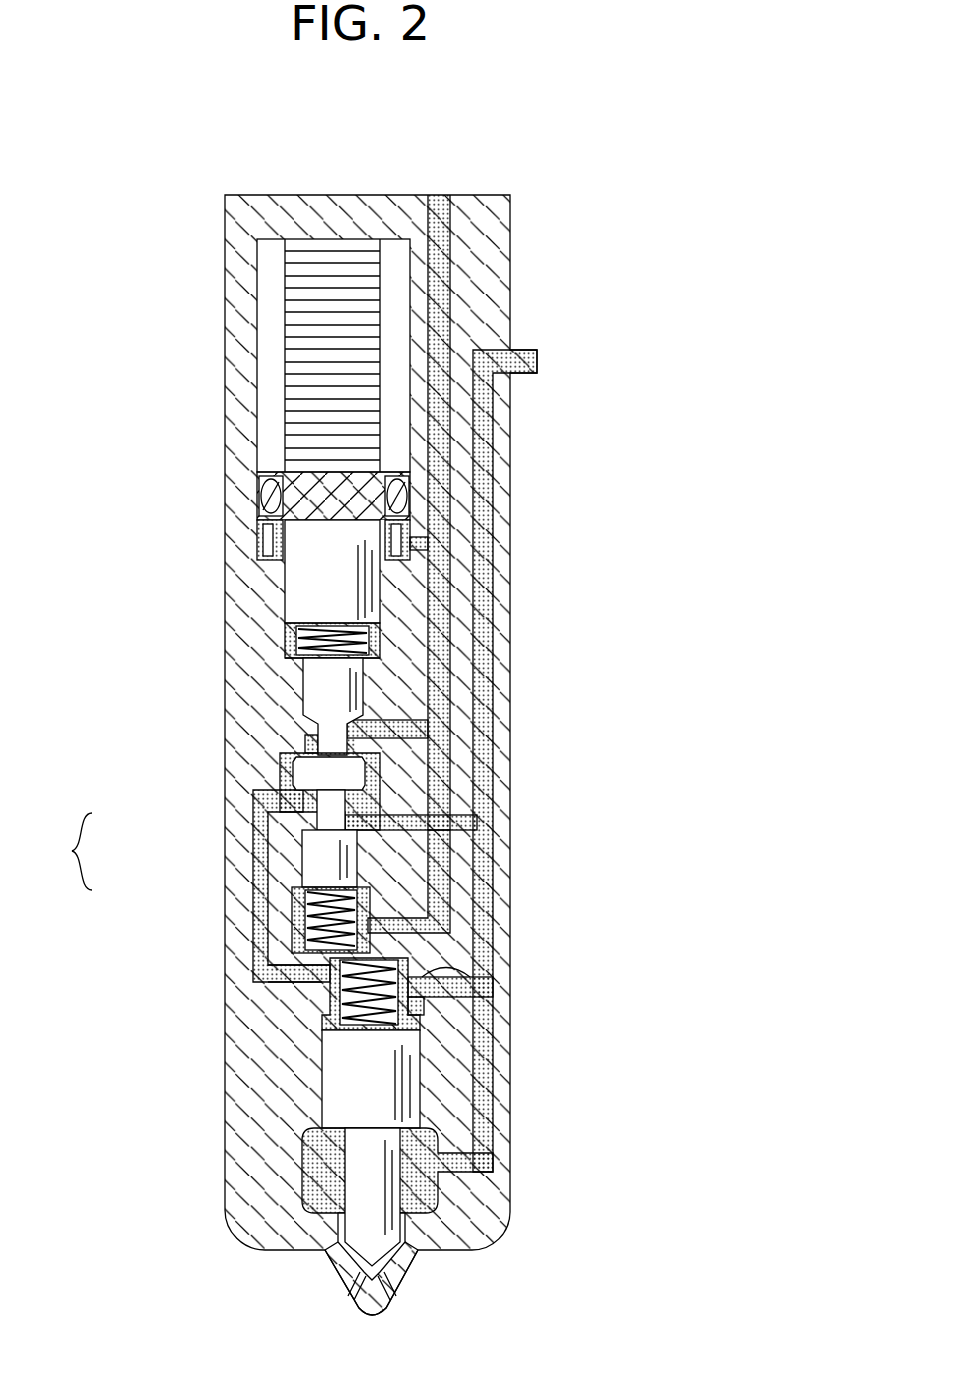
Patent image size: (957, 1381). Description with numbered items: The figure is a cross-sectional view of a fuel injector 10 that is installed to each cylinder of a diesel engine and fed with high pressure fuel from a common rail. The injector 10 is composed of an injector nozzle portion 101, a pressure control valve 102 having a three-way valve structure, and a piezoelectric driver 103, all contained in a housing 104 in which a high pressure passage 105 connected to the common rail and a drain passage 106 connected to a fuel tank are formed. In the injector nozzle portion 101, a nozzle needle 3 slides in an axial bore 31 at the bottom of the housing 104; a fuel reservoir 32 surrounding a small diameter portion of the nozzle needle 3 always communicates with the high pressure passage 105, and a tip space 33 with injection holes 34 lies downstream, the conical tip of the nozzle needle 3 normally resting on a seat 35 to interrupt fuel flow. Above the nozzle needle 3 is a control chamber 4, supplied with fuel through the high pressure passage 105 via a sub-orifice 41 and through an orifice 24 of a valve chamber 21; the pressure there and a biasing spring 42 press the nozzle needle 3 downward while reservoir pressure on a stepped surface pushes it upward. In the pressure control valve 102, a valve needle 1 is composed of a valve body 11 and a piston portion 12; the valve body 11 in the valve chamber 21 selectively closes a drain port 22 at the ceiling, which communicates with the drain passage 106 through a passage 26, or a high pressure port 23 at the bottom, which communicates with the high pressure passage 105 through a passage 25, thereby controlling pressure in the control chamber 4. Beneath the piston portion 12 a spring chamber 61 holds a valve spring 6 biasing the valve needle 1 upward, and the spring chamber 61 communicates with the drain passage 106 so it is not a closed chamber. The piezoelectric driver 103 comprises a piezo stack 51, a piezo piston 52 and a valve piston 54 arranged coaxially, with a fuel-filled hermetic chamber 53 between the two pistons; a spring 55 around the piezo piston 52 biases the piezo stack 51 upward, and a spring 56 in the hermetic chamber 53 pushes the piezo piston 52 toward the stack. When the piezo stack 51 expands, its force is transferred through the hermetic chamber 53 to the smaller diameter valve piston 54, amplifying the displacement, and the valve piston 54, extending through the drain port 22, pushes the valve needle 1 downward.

The fuel injector 10 is at (185, 183).
The injector nozzle portion 101 is at (612, 1043).
The pressure control valve 102 is at (618, 752).
The piezoelectric driver 103 is at (620, 483).
The housing 104 is at (245, 1148).
The high pressure passage 105 is at (490, 415).
The drain passage 106 is at (436, 283).
The piezo stack 51 is at (315, 295).
The piezo piston 52 is at (315, 568).
The hermetic chamber 53 is at (300, 632).
The valve piston 54 is at (312, 690).
The spring 55 is at (268, 530).
The spring 56 is at (293, 660).
The valve needle 1 is at (201, 840).
The valve body 11 is at (310, 828).
The piston portion 12 is at (330, 855).
The valve spring 6 is at (330, 915).
The spring chamber 61 is at (330, 966).
The control chamber 4 is at (325, 997).
The nozzle needle 3 is at (345, 1078).
The axial bore 31 is at (393, 1053).
The fuel reservoir 32 is at (430, 1183).
The tip space 33 is at (340, 1268).
The injection holes 34 is at (397, 1277).
The seat 35 is at (397, 1250).
The valve chamber 21 is at (372, 775).
The drain port 22 is at (352, 742).
The high pressure port 23 is at (400, 825).
The orifice 24 is at (302, 792).
The passage 25 is at (432, 852).
The passage 26 is at (400, 718).
The sub-orifice 41 is at (422, 976).
The biasing spring 42 is at (420, 1008).